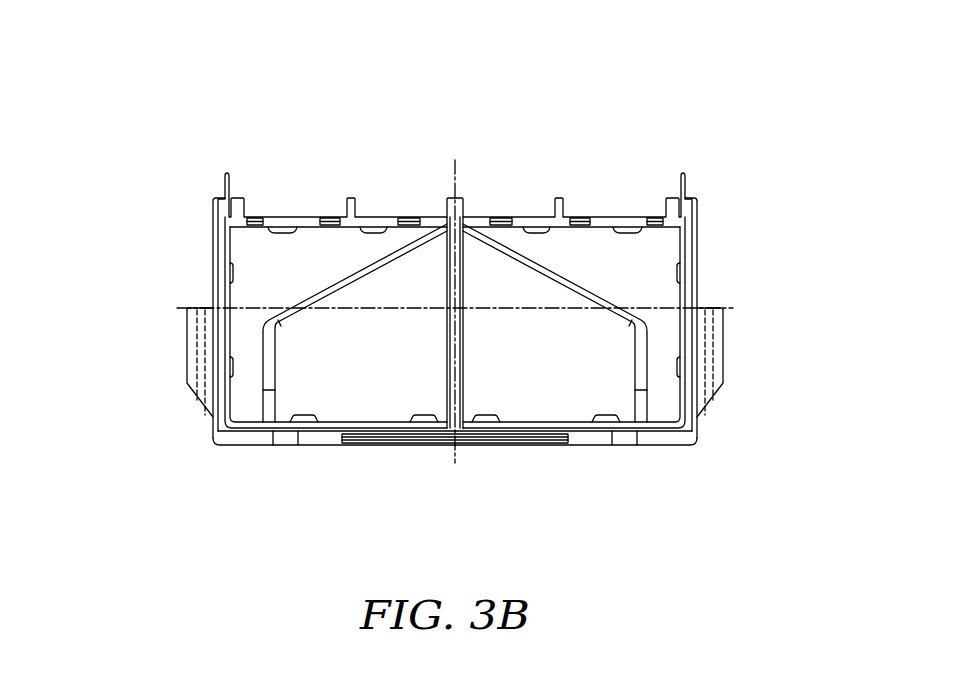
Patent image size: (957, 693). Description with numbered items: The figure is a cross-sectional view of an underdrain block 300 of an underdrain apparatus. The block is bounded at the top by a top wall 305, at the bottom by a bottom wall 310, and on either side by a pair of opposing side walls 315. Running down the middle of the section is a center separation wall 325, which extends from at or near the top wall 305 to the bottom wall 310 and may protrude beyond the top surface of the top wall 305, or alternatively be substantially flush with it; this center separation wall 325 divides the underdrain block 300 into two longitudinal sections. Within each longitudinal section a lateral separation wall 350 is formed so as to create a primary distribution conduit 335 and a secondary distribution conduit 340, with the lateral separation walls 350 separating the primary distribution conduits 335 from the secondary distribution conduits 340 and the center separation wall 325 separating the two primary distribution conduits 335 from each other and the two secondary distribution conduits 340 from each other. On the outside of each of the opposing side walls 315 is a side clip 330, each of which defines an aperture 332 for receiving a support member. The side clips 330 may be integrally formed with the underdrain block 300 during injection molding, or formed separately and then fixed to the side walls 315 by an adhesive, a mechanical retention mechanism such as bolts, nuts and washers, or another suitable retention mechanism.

The underdrain block 300 is at (742, 65).
The top wall 305 is at (514, 216).
The bottom wall 310 is at (533, 445).
The side walls 315 is at (213, 273).
The center separation wall 325 is at (447, 363).
The side clips 330 is at (187, 357).
The aperture 332 is at (197, 305).
The primary distribution conduits 335 is at (372, 398).
The secondary distribution conduits 340 is at (267, 250).
The lateral separation walls 350 is at (323, 283).